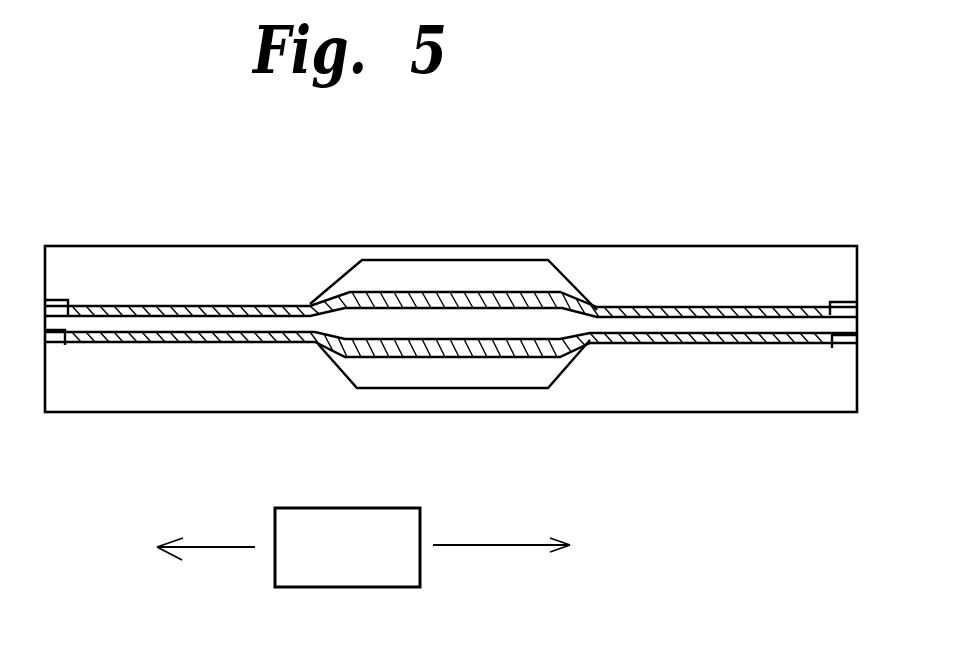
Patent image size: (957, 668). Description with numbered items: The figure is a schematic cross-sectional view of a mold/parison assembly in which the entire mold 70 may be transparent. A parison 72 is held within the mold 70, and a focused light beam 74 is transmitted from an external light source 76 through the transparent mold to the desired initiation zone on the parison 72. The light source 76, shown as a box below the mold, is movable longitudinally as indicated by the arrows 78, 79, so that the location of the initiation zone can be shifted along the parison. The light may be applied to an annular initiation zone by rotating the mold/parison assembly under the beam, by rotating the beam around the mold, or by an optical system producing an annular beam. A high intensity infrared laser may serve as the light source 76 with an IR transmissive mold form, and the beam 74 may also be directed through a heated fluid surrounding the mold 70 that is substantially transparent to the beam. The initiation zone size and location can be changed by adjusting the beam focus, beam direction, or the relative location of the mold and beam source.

The mold 70 is at (140, 392).
The parison 72 is at (451, 403).
The focused light beam 74 is at (350, 358).
The external light source 76 is at (360, 587).
The arrow 78 is at (212, 545).
The arrow 79 is at (500, 545).